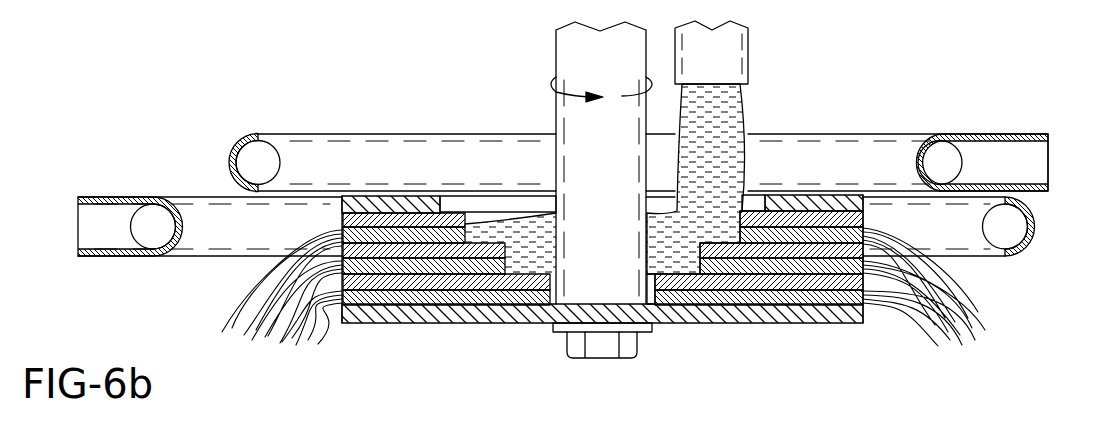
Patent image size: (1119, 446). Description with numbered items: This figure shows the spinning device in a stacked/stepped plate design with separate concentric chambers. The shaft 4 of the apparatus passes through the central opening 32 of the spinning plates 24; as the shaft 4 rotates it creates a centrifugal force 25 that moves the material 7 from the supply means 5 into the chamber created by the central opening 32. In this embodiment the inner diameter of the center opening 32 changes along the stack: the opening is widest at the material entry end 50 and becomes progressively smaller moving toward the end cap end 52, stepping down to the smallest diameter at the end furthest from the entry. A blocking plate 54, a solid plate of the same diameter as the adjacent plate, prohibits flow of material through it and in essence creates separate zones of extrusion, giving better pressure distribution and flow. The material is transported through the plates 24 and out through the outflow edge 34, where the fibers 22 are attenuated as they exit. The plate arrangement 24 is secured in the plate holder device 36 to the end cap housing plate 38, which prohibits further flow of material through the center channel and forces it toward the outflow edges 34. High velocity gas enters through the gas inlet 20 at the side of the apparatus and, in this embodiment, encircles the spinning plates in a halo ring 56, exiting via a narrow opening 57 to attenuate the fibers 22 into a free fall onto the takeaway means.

The shaft 4 is at (592, 68).
The supply means 5 is at (728, 55).
The material 7 is at (722, 110).
The gas inlet 20 is at (85, 216).
The fibers 22 is at (258, 296).
The spinning plates 24 is at (381, 274).
The centrifugal force 25 is at (550, 84).
The central opening 32 is at (754, 205).
The outflow edge 34 is at (332, 292).
The plate holder device 36 is at (385, 205).
The end cap housing plate 38 is at (488, 312).
The material entry end 50 is at (790, 212).
The end cap end 52 is at (672, 275).
The blocking plate 54 is at (493, 263).
The halo ring 56 is at (258, 158).
The narrow opening 57 is at (258, 192).